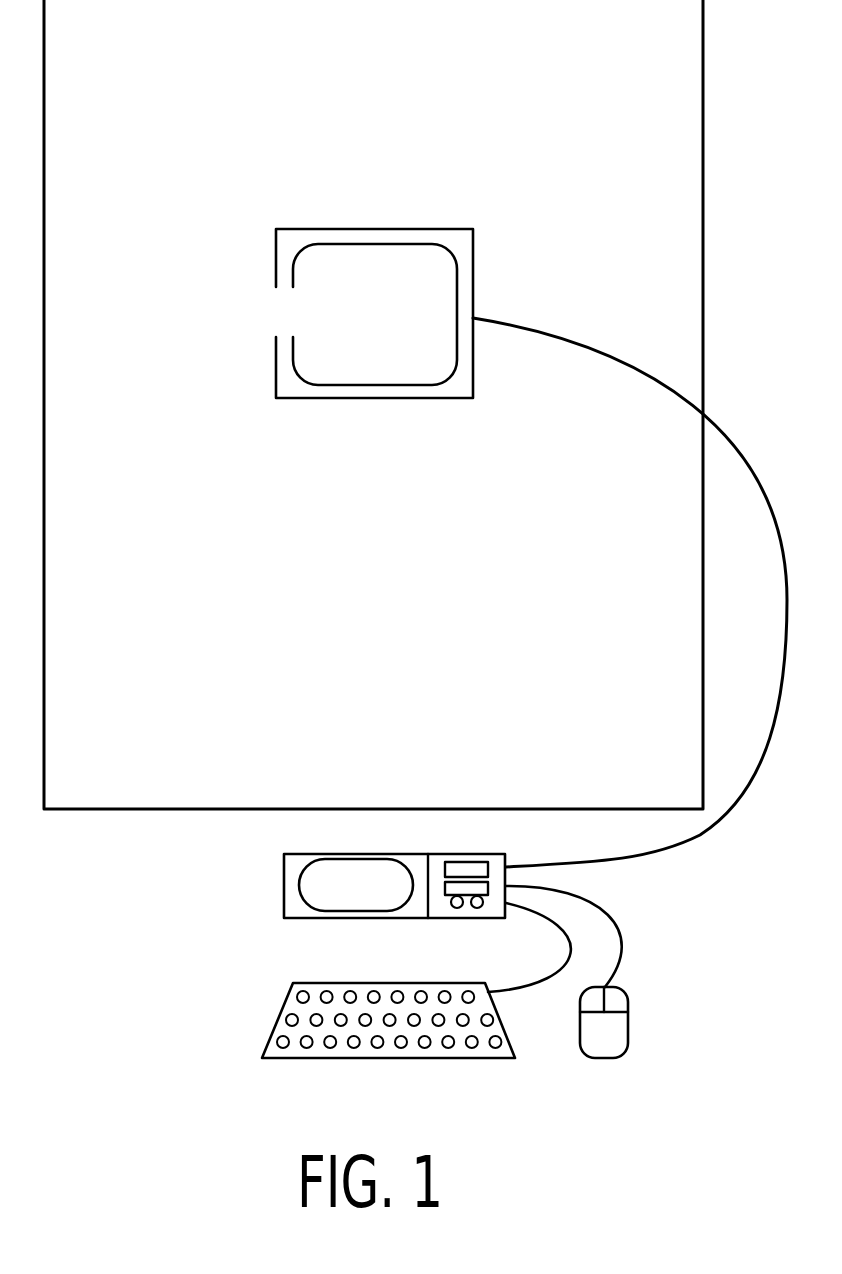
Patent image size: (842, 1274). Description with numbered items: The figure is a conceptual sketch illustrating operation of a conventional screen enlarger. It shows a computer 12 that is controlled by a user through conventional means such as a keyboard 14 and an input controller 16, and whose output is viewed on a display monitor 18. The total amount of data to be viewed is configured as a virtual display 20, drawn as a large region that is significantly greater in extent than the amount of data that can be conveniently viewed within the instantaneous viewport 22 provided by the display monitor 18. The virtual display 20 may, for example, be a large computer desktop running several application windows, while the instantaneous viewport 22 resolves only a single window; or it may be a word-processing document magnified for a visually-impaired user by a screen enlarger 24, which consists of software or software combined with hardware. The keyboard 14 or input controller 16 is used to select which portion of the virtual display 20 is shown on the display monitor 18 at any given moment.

The computer 12 is at (284, 877).
The keyboard 14 is at (275, 1018).
The input controller 16 is at (628, 1025).
The display monitor 18 is at (477, 278).
The virtual display 20 is at (705, 353).
The instantaneous viewport 22 is at (438, 247).
The screen enlarger 24 is at (317, 893).